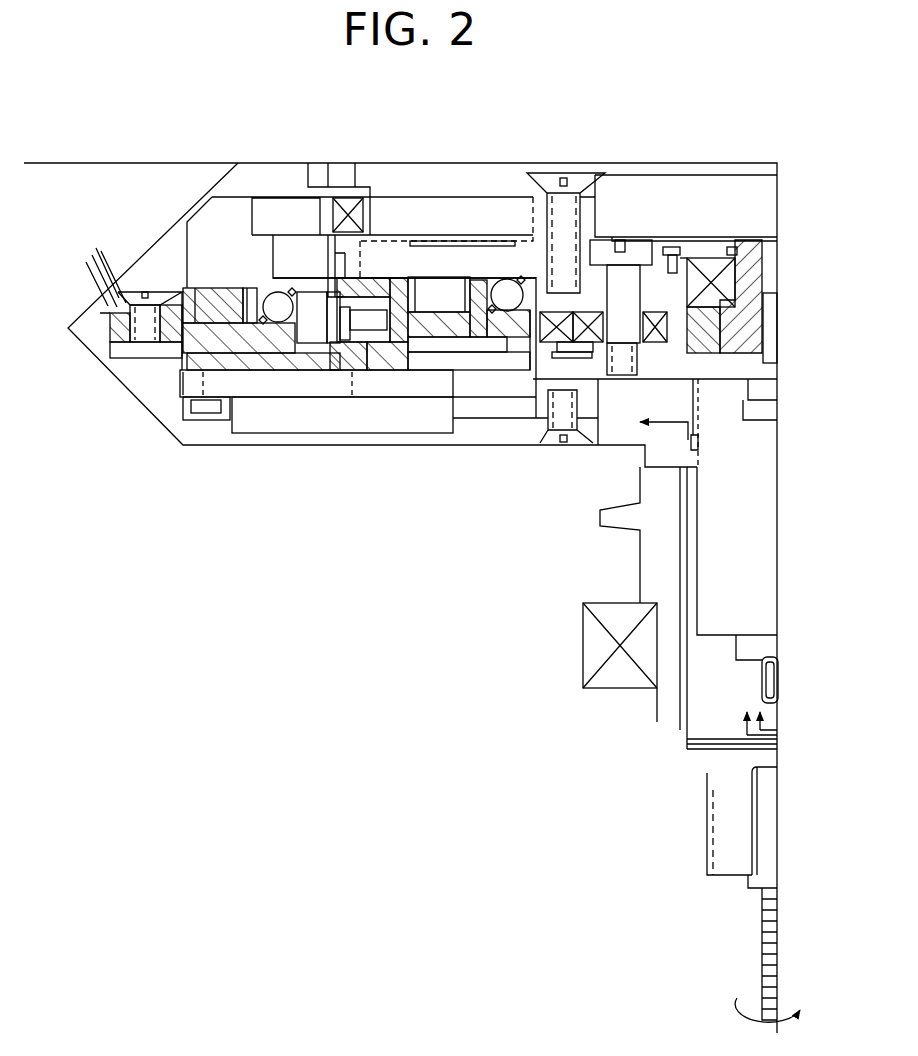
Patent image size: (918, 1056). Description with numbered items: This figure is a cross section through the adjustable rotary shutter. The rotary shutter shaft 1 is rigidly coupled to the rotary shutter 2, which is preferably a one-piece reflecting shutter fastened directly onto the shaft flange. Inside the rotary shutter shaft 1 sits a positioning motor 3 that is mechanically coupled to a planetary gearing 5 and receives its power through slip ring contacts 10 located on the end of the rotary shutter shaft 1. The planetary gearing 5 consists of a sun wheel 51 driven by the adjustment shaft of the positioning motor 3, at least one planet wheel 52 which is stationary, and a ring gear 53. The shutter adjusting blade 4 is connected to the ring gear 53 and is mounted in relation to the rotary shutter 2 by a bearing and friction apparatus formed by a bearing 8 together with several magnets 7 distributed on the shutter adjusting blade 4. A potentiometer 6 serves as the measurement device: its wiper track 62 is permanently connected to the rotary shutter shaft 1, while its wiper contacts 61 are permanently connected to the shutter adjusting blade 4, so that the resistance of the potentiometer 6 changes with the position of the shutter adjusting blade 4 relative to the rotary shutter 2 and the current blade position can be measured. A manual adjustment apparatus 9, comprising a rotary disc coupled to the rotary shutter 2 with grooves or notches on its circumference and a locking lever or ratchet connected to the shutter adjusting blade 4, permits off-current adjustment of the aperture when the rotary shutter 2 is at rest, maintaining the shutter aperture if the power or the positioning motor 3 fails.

The rotary shutter shaft 1 is at (648, 563).
The rotary shutter 2 is at (760, 186).
The positioning motor 3 is at (760, 487).
The shutter adjusting blade 4 is at (78, 258).
The planetary gearing 5 is at (784, 322).
The sun wheel 51 is at (750, 270).
The planet wheel 52 is at (545, 358).
The ring gear 53 is at (518, 348).
The potentiometer 6 is at (348, 422).
The wiper contacts 61 is at (307, 373).
The wiper track 62 is at (390, 418).
The magnets 7 is at (210, 315).
The bearing 8 is at (283, 318).
The manual adjustment apparatus 9 is at (350, 210).
The slip ring contacts 10 is at (772, 932).